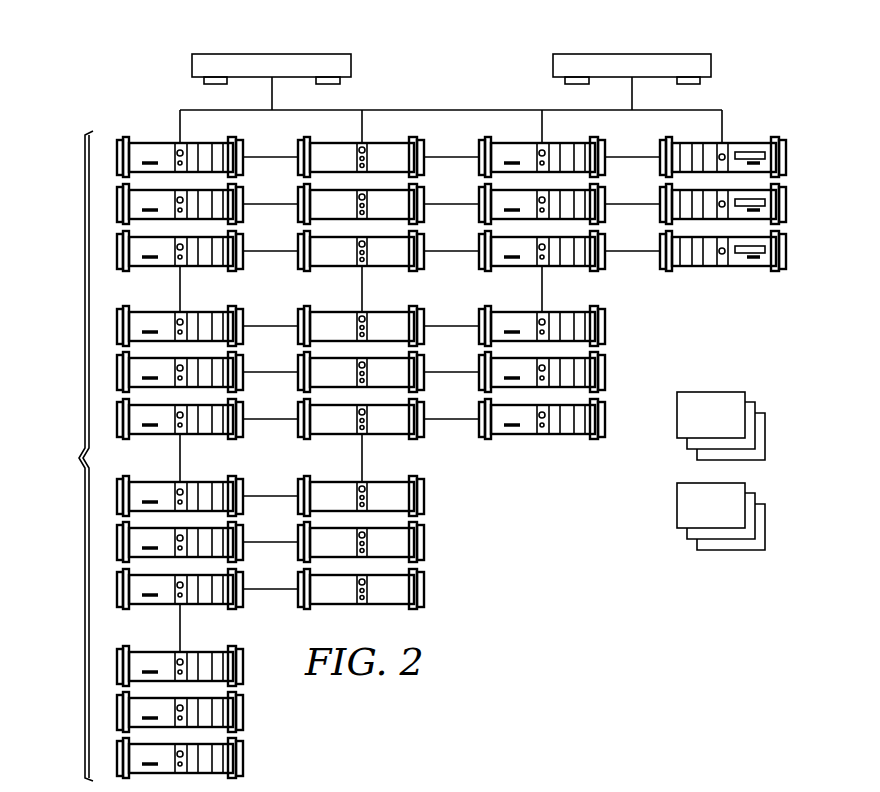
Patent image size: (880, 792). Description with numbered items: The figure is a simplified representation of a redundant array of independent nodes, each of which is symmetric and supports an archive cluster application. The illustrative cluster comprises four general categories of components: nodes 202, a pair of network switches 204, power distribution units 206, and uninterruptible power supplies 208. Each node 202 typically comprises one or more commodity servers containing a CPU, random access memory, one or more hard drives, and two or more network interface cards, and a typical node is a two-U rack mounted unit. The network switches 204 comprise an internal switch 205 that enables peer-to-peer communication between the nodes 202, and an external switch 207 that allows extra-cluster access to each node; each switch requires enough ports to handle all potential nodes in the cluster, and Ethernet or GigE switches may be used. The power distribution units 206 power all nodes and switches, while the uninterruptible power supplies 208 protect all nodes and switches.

The nodes 202 is at (62, 456).
The network switches 204 is at (780, 99).
The internal switch 205 is at (192, 68).
The power distribution units 206 is at (711, 392).
The external switch 207 is at (711, 65).
The uninterruptible power supplies 208 is at (733, 551).